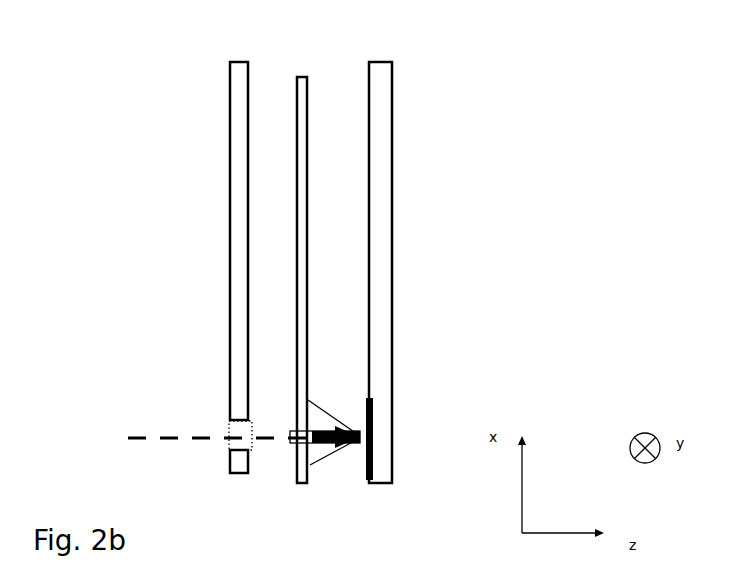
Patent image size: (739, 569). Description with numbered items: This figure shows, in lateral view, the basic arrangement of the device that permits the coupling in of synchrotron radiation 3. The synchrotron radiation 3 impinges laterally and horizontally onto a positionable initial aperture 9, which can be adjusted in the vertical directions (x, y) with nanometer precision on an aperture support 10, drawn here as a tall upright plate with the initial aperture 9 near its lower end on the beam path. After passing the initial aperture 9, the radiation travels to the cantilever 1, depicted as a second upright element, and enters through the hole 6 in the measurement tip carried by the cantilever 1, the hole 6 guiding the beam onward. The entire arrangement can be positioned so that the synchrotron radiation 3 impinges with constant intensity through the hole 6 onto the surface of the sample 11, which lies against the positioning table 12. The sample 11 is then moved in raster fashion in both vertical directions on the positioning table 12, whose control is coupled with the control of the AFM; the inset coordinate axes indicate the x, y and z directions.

The cantilever 1 is at (302, 74).
The synchrotron radiation 3 is at (127, 430).
The hole 6 is at (317, 441).
The initial aperture 9 is at (224, 422).
The aperture support 10 is at (238, 60).
The sample 11 is at (362, 478).
The positioning table 12 is at (372, 60).